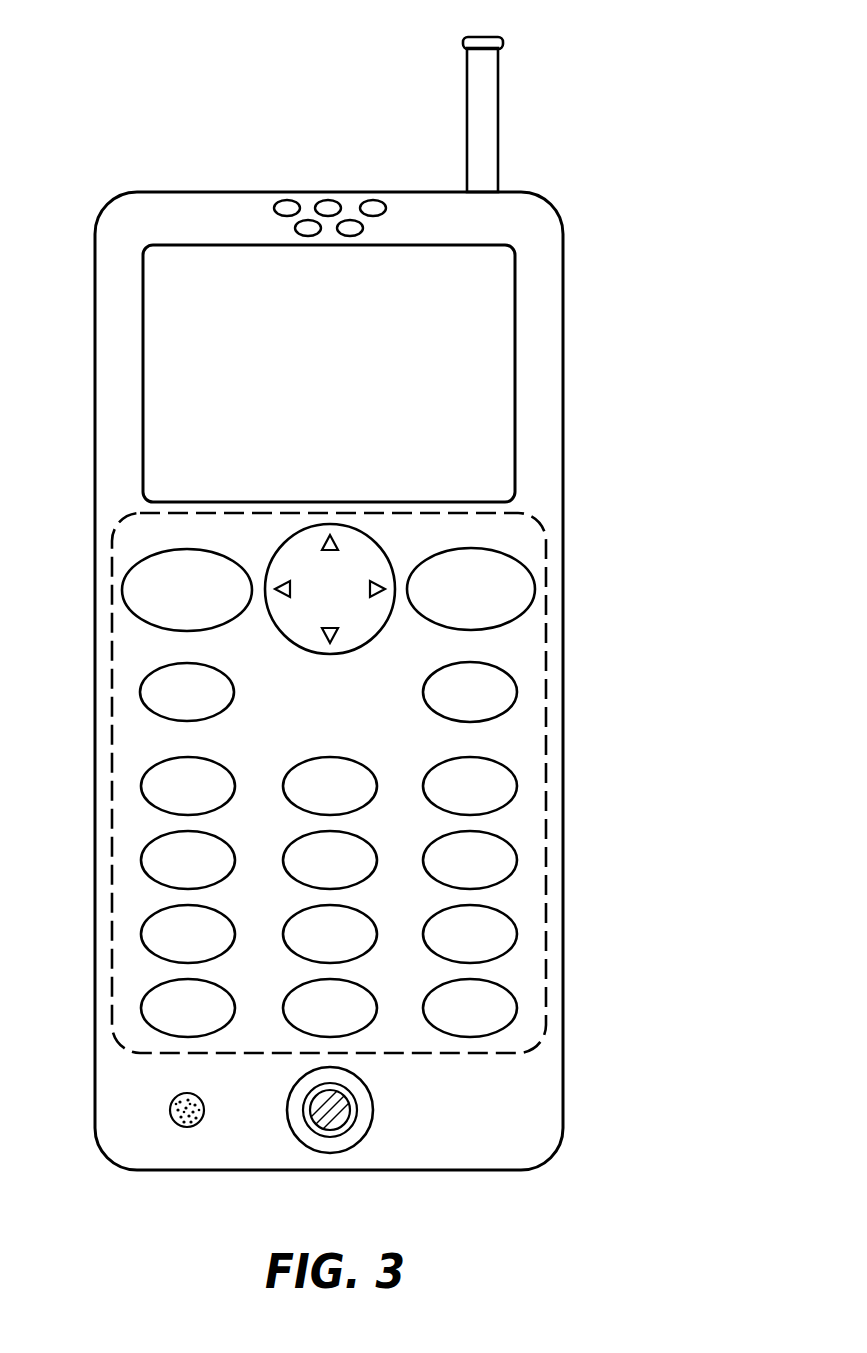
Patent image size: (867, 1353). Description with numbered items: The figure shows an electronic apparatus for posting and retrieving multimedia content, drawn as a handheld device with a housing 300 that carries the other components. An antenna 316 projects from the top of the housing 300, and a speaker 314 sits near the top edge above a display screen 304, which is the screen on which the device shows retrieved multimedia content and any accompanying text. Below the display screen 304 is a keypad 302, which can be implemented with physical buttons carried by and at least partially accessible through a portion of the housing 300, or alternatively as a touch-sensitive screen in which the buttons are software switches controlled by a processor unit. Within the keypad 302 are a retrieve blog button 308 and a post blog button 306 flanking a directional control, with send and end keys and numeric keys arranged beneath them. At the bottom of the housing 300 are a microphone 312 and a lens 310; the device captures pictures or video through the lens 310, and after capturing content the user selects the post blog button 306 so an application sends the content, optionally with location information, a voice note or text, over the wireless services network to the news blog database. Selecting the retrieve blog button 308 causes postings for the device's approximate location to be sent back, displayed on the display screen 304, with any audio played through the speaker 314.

The housing 300 is at (563, 263).
The keypad 302 is at (523, 513).
The display screen 304 is at (515, 368).
The post blog button 306 is at (522, 562).
The retrieve blog button 308 is at (143, 555).
The lens 310 is at (332, 1133).
The microphone 312 is at (187, 1128).
The speaker 314 is at (336, 201).
The antenna 316 is at (490, 37).